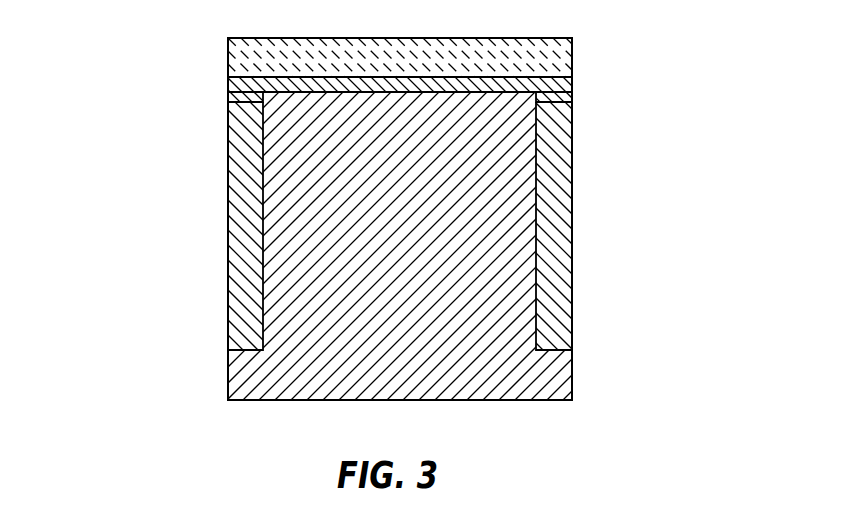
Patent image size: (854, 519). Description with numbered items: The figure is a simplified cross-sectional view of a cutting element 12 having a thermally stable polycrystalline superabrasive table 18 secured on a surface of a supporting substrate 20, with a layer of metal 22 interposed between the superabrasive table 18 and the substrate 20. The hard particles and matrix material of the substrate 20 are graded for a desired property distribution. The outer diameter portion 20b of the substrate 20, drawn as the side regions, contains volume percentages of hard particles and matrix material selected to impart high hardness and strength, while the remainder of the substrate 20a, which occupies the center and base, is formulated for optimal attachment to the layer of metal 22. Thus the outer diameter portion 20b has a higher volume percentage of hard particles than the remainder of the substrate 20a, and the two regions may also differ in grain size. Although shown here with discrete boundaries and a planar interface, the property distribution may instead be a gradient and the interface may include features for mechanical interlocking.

The cutting element 12 is at (427, 212).
The thermally stable polycrystalline superabrasive table 18 is at (552, 60).
The layer of metal 22 is at (232, 88).
The supporting substrate 20 is at (427, 246).
The remainder of the substrate 20a is at (282, 372).
The outer diameter portion 20b is at (243, 206).